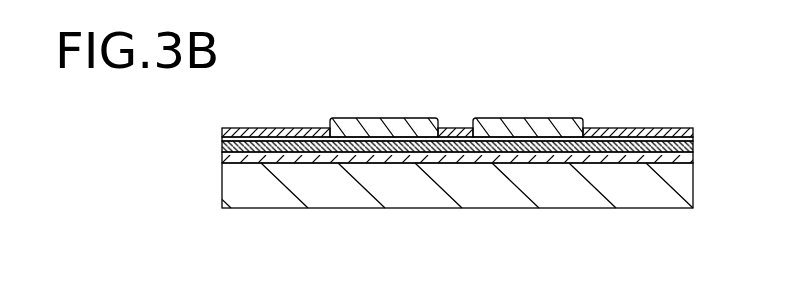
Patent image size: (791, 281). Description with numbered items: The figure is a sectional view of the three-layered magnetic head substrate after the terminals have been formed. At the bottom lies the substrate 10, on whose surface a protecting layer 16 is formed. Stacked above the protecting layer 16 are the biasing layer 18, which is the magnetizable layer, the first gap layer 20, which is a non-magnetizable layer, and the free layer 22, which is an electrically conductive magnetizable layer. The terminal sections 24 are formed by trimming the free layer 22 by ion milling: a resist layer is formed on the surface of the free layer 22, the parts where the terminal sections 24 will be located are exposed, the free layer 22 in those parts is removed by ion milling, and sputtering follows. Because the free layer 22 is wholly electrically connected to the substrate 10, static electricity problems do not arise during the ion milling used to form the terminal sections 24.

The substrate 10 is at (502, 203).
The protecting layer 16 is at (252, 160).
The biasing layer 18 is at (297, 146).
The first gap layer 20 is at (665, 140).
The free layer 22 is at (611, 131).
The terminal sections 24 is at (402, 123).